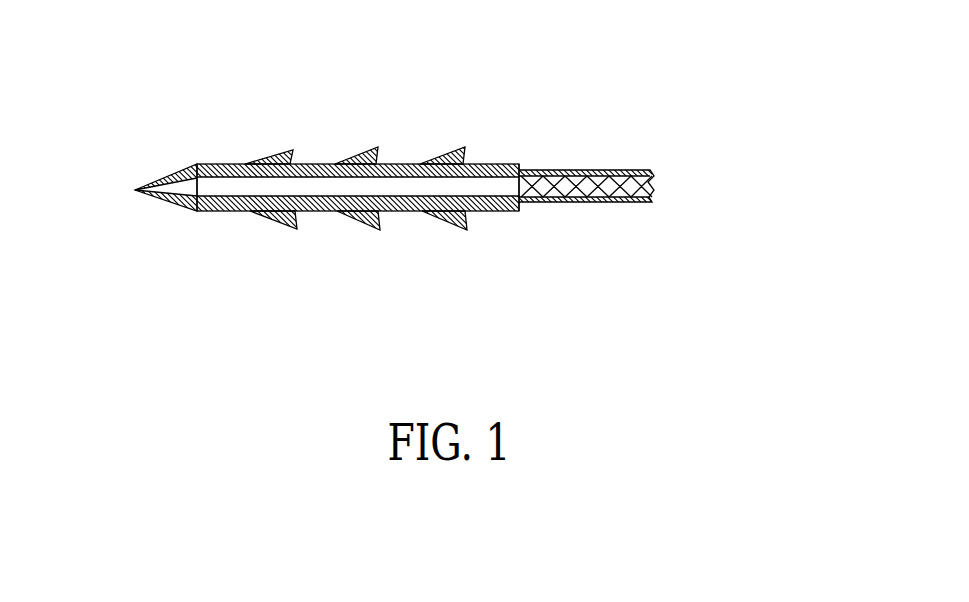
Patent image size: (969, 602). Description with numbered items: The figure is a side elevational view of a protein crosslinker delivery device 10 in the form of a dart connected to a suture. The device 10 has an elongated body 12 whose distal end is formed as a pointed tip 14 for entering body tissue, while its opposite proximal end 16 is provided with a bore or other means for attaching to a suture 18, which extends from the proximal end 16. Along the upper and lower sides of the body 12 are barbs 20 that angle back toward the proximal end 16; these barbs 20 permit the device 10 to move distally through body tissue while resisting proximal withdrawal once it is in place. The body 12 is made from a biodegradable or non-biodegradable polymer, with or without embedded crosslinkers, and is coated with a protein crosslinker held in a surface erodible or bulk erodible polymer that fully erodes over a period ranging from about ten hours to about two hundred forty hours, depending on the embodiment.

The protein crosslinker delivery device 10 is at (724, 72).
The body 12 is at (214, 217).
The pointed tip 14 is at (135, 190).
The proximal end 16 is at (516, 163).
The suture 18 is at (596, 202).
The barbs 20 is at (292, 153).